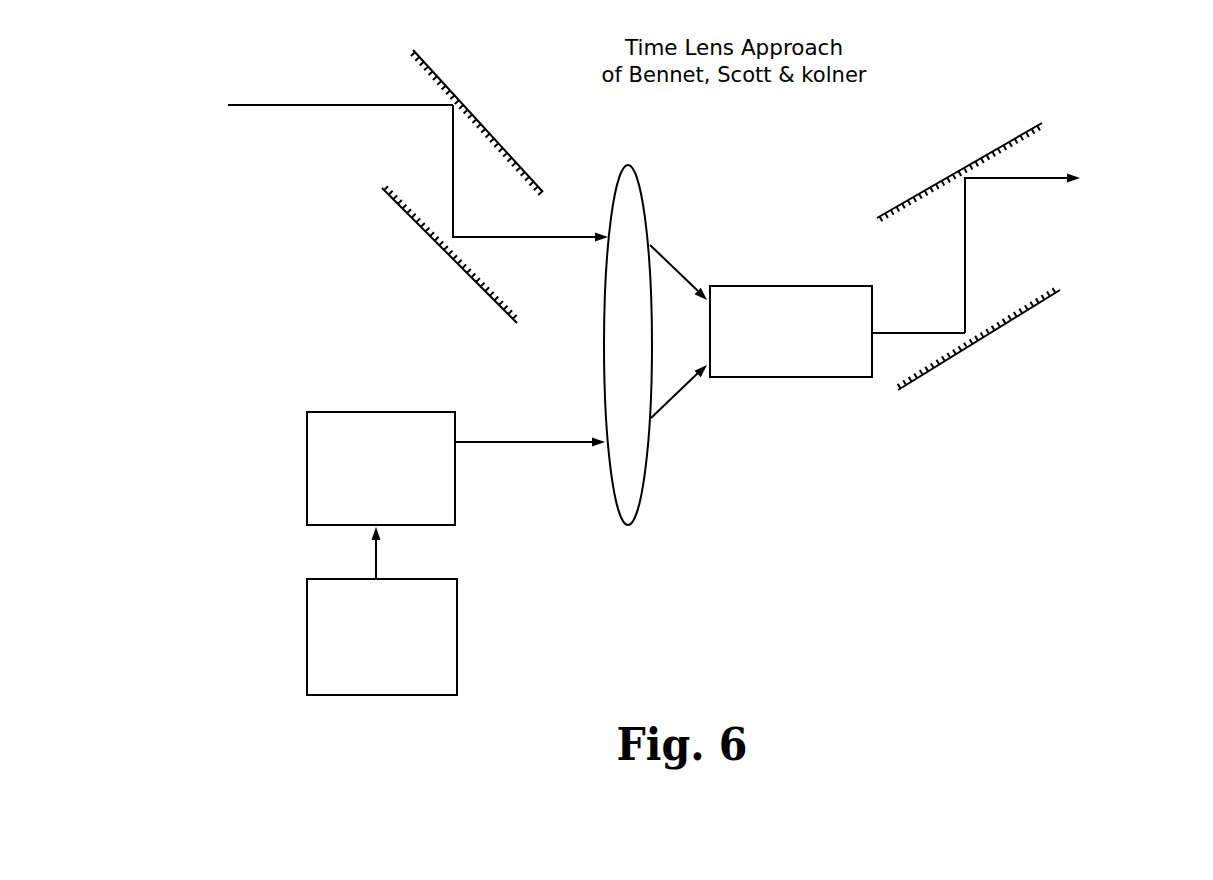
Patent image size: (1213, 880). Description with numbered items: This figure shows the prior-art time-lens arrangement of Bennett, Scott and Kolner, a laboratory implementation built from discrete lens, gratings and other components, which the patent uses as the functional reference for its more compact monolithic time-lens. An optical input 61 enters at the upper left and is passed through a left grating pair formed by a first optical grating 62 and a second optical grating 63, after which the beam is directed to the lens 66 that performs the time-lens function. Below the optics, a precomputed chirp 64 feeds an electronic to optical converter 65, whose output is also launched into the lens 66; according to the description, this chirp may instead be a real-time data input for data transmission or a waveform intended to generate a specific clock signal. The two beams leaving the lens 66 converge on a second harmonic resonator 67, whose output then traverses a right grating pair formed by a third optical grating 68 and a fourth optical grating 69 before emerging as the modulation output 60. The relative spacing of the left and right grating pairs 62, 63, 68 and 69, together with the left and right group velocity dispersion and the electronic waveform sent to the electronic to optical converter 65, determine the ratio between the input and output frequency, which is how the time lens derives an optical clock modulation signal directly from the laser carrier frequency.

The modulation output 60 is at (1109, 225).
The optical input 61 is at (265, 127).
The optical grating 62 is at (395, 51).
The optical grating 63 is at (490, 326).
The precomputed chirp 64 is at (313, 710).
The electronic to optical converter 65 is at (308, 542).
The time lens 66 is at (600, 540).
The 2nd harmonic resonator 67 is at (755, 397).
The optical grating 68 is at (854, 238).
The optical grating 69 is at (864, 422).